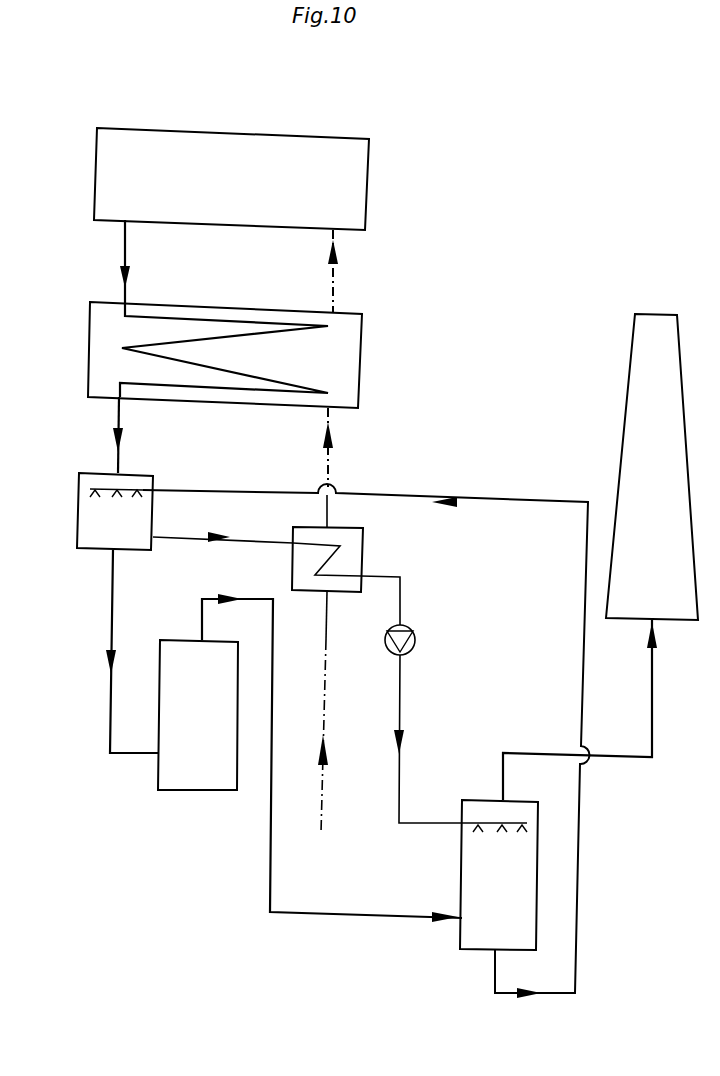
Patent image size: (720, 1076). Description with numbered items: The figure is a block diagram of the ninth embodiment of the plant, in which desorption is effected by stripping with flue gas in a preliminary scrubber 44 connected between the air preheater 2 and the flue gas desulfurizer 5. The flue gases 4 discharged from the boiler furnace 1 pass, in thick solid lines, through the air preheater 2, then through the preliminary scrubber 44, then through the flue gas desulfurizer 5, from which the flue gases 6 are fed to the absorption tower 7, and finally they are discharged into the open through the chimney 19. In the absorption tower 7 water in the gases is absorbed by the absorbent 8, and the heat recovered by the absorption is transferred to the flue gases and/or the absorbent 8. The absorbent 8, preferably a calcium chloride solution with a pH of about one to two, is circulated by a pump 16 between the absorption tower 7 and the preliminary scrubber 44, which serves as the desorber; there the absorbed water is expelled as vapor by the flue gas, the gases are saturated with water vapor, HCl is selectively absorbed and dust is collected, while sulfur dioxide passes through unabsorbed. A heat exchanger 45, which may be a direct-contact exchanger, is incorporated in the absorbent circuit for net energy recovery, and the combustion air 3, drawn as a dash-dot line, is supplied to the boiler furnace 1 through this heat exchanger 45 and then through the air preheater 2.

The boiler furnace 1 is at (203, 148).
The air preheater 2 is at (97, 347).
The combustion air 3 is at (335, 290).
The flue gases 4 is at (122, 257).
The flue gas desulfurizer 5 is at (177, 650).
The flue gases 6 is at (265, 840).
The absorption tower 7 is at (475, 810).
The absorbent 8 is at (528, 498).
The pump 16 is at (412, 630).
The chimney 19 is at (632, 610).
The preliminary scrubber 44 is at (85, 523).
The heat exchanger 45 is at (356, 547).